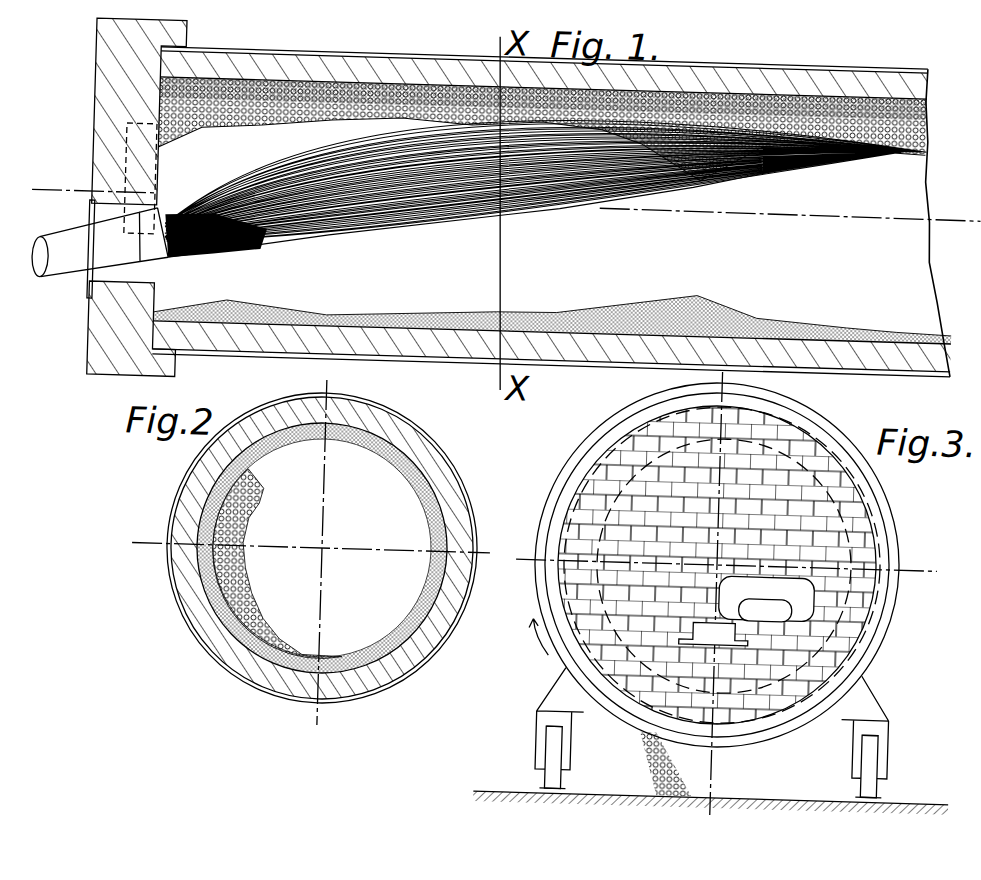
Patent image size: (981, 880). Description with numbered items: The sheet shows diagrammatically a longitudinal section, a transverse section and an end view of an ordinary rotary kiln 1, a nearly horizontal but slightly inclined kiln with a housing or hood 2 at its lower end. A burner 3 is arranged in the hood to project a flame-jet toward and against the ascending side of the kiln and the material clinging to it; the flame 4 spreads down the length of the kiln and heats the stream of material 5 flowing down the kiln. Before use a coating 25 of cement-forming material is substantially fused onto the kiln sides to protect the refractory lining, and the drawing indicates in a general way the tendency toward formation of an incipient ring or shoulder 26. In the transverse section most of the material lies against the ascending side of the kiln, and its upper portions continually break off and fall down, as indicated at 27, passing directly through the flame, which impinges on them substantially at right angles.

In FIG. 1, the rotary kiln 1 is at (356, 61).
In FIG. 3, the rotary kiln 1 is at (893, 507).
In FIG. 1, the housing or hood 2 is at (91, 162).
In FIG. 3, the housing or hood 2 is at (899, 541).
In FIG. 1, the burner 3 is at (70, 265).
In FIG. 3, the burner 3 is at (816, 618).
In FIG. 1, the flame 4 is at (441, 215).
In FIG. 1, the stream of material 5 is at (945, 132).
In FIG. 2, the stream of material 5 is at (259, 604).
In FIG. 3, the stream of material 5 is at (635, 572).
In FIG. 1, the coating 25 is at (594, 318).
In FIG. 1, the incipient ring or shoulder 26 is at (698, 114).
In FIG. 2, the falling material 27 is at (256, 499).